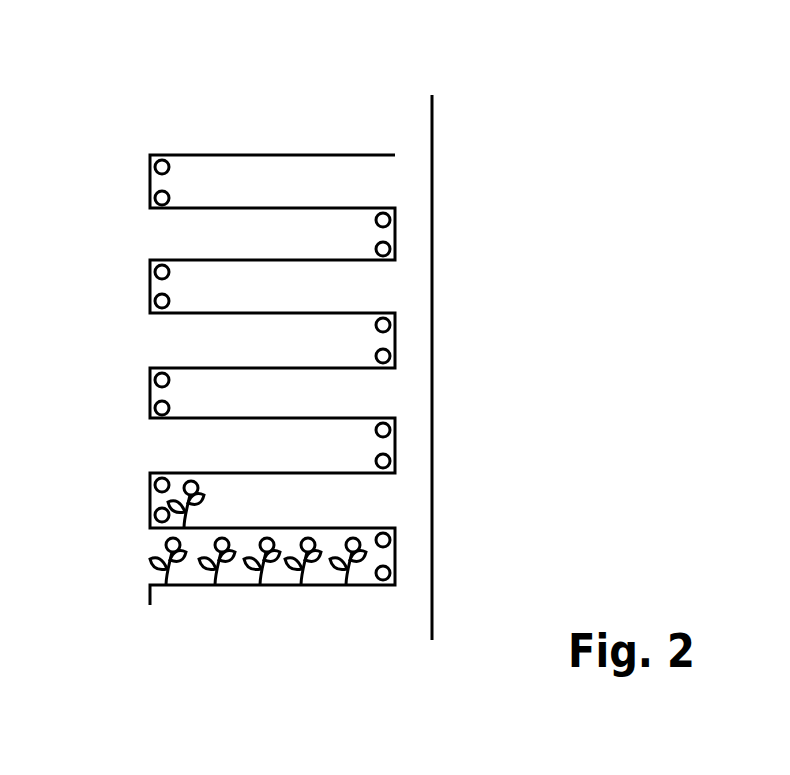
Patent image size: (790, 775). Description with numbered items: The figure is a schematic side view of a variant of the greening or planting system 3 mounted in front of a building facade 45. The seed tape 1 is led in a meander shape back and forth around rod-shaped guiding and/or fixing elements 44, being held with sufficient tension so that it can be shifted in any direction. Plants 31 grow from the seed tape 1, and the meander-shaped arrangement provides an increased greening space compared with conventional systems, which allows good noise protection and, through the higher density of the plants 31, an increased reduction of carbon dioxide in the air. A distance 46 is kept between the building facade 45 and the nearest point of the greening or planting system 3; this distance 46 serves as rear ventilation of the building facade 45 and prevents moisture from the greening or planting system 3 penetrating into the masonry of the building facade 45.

The seed tape 1 is at (221, 327).
The greening or planting system 3 is at (150, 285).
The plants 31 is at (150, 562).
The guiding and/or fixing element 44 is at (158, 410).
The building facade 45 is at (433, 553).
The distance 46 is at (397, 233).